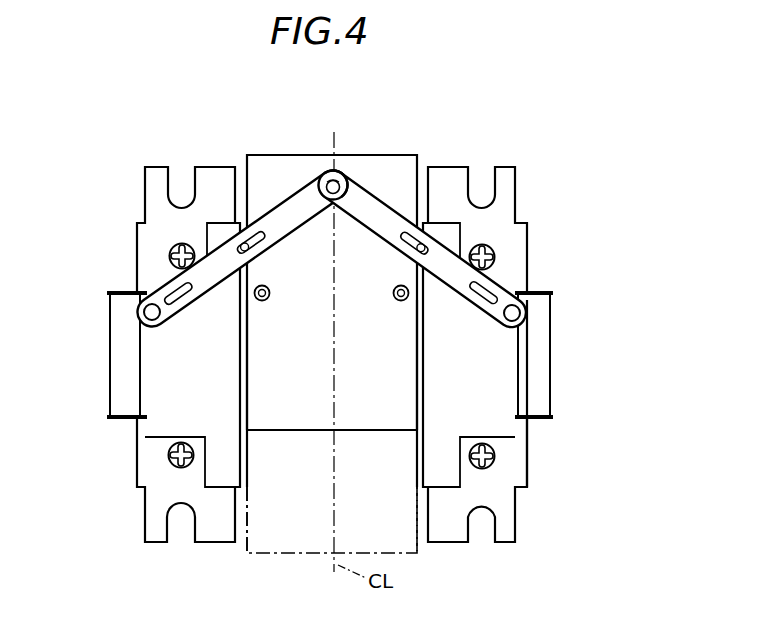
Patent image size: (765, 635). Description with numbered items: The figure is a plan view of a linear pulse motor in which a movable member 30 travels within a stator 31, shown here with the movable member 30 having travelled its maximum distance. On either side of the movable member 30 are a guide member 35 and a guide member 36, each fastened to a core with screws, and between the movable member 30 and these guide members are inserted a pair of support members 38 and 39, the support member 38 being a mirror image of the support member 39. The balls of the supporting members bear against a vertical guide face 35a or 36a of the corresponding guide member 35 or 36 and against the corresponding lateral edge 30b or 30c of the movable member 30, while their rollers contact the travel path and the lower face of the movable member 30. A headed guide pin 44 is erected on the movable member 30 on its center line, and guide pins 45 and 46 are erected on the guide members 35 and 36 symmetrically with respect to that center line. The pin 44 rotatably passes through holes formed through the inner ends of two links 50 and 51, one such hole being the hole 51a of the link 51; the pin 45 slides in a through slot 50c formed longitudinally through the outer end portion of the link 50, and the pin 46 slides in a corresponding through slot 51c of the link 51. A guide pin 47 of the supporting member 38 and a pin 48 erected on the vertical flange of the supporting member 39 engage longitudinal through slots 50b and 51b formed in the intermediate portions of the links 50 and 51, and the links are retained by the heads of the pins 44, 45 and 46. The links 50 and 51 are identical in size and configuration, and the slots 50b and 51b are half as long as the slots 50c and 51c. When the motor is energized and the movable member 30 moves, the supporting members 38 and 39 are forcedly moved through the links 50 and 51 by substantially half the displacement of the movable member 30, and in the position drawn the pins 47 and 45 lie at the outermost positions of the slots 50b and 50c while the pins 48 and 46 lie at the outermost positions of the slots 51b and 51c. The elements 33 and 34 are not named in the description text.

The movable member 30 is at (408, 158).
The lateral edge of the movable member 30b is at (246, 365).
The lateral edge of the movable member 30c is at (419, 358).
The stator 31 is at (555, 446).
The right solenoid coil 33 is at (549, 357).
The left solenoid coil 34 is at (112, 357).
The guide member 35 is at (502, 398).
The vertical guide face 35a is at (424, 408).
The guide member 36 is at (153, 393).
The vertical guide face 36a is at (238, 410).
The support member 38 is at (420, 490).
The support member 39 is at (240, 490).
The guide pin 44 is at (328, 182).
The guide pin 45 is at (514, 312).
The guide pin 46 is at (148, 312).
The guide pin 47 is at (420, 250).
The pin 48 is at (250, 250).
The link 50 is at (459, 298).
The longitudinal through slot 50b is at (408, 242).
The through slot 50c is at (490, 300).
The link 51 is at (187, 313).
The hole 51a is at (343, 188).
The longitudinal through slot 51b is at (255, 238).
The through slot 51c is at (172, 293).